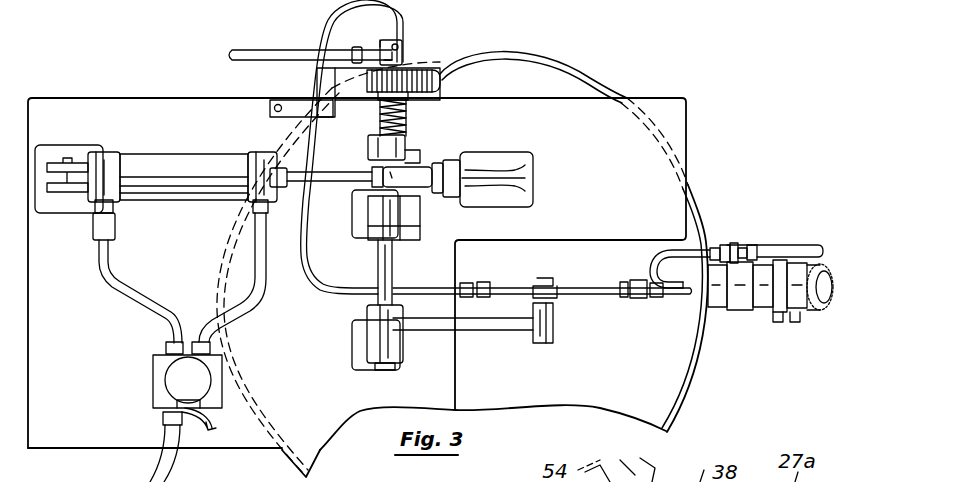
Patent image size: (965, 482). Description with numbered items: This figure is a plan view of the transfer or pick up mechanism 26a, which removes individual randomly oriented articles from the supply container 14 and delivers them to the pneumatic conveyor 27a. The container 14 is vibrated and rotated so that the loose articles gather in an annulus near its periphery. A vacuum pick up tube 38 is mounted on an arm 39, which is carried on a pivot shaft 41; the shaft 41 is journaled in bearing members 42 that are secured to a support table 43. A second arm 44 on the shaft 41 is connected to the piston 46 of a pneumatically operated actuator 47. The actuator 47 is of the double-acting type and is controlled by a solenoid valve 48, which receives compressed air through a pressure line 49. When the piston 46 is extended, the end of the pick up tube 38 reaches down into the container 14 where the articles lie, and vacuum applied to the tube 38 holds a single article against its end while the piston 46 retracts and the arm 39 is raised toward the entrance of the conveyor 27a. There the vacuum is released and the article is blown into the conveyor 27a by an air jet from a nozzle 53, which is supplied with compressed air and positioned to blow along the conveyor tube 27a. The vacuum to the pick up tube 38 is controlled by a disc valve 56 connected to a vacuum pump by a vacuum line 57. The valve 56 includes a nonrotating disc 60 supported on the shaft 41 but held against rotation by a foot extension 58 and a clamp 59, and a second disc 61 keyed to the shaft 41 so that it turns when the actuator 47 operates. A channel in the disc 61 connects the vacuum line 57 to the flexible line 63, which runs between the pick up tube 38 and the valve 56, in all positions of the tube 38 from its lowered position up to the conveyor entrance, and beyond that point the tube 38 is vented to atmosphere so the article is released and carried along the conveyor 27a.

The container 14 is at (703, 365).
The transfer or pick up mechanism 26a is at (636, 95).
The pneumatic conveyor 27a is at (815, 310).
The vacuum pick up tube 38 is at (665, 303).
The arm 39 is at (500, 331).
The pivot shaft 41 is at (395, 281).
The bearing members 42 is at (418, 220).
The support table 43 is at (676, 120).
The second arm 44 is at (418, 152).
The piston 46 is at (338, 183).
The pneumatically operated actuator 47 is at (170, 158).
The solenoid valve 48 is at (153, 372).
The pressure line 49 is at (158, 463).
The nozzle 53 is at (712, 237).
The disc valve 56 is at (452, 70).
The vacuum line 57 is at (248, 50).
The foot extension 58 is at (318, 80).
The clamp 59 is at (315, 112).
The nonrotating disc 60 is at (415, 70).
The second disc 61 is at (446, 88).
The flexible line 63 is at (323, 288).